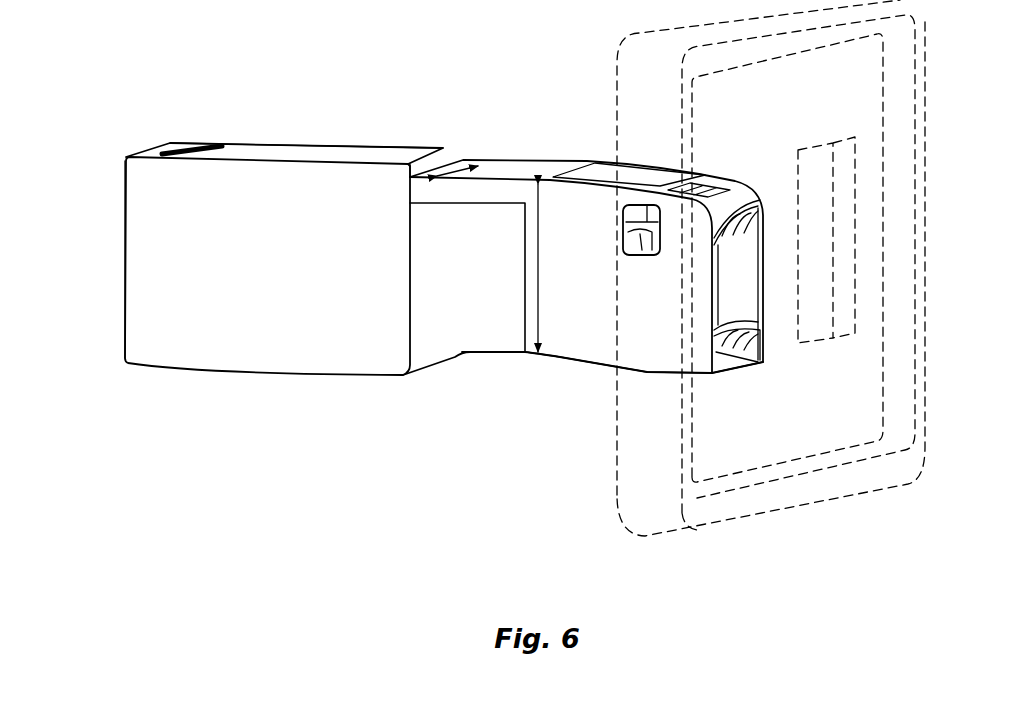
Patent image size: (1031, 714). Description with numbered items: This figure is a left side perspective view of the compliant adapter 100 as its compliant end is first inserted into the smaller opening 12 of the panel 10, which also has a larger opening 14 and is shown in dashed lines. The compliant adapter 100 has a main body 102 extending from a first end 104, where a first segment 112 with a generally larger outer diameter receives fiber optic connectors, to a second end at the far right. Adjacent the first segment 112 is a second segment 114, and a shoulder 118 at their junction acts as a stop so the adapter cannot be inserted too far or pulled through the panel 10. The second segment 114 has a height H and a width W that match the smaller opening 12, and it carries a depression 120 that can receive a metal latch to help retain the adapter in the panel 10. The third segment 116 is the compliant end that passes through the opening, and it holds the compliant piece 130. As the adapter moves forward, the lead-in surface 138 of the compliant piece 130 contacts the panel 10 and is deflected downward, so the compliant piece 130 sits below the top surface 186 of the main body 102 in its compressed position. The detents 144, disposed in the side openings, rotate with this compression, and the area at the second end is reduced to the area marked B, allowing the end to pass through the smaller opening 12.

The panel 10 is at (925, 219).
The smaller opening 12 is at (700, 377).
The larger opening 14 is at (833, 340).
The compliant adapter 100 is at (457, 276).
The main body 102 is at (168, 372).
The first end 104 is at (112, 334).
The first segment 112 is at (296, 143).
The second segment 114 is at (507, 160).
The third segment 116 is at (578, 375).
The shoulder 118 is at (460, 158).
The depression 120 is at (457, 281).
The compliant piece 130 is at (740, 202).
The lead-in surface 138 is at (718, 205).
The detents 144 is at (628, 222).
The top surface 186 is at (652, 193).
The width W is at (462, 160).
The height H is at (541, 273).
The reduced area B is at (730, 265).